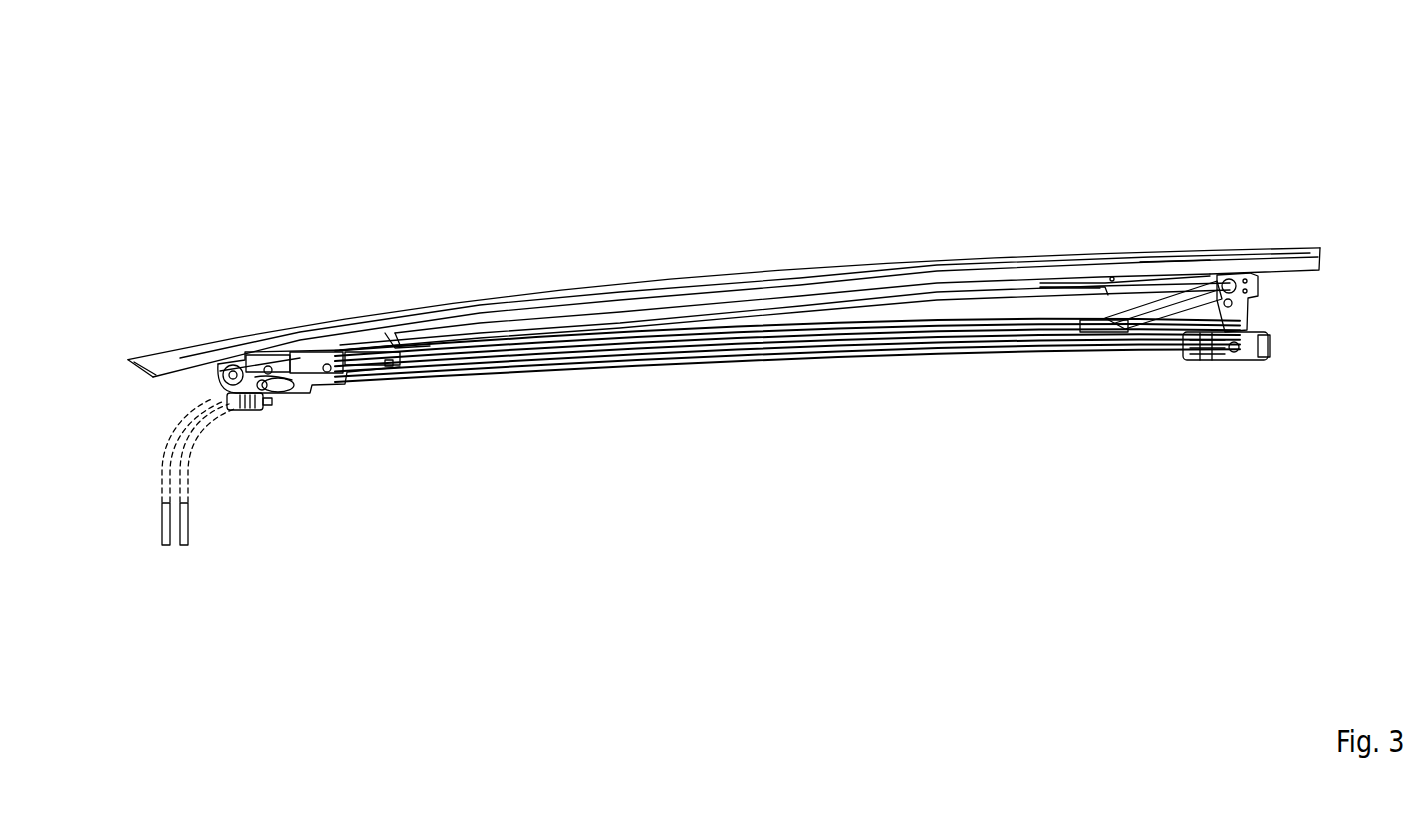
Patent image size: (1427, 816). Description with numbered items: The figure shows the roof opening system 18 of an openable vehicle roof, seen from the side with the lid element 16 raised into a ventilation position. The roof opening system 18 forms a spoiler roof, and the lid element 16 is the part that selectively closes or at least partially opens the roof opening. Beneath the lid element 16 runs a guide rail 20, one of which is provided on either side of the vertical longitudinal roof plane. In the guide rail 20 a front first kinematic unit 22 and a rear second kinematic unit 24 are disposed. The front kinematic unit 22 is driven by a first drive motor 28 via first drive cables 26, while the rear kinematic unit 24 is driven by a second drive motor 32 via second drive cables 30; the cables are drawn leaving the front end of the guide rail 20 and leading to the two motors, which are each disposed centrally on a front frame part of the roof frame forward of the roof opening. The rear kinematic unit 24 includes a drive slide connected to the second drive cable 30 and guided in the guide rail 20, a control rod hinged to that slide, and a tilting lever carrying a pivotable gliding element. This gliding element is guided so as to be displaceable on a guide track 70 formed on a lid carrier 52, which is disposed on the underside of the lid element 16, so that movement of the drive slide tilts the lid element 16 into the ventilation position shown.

The roof opening system 18 is at (697, 344).
The lid element 16 is at (677, 275).
The guide rail 20 is at (678, 352).
The front first kinematic unit 22 is at (269, 410).
The rear second kinematic unit 24 is at (1250, 318).
The first drive cables 26 is at (167, 477).
The first drive motor 28 is at (165, 542).
The second drive cables 30 is at (193, 477).
The second drive motor 32 is at (183, 542).
The lid carrier 52 is at (1132, 281).
The guide track 70 is at (1150, 291).